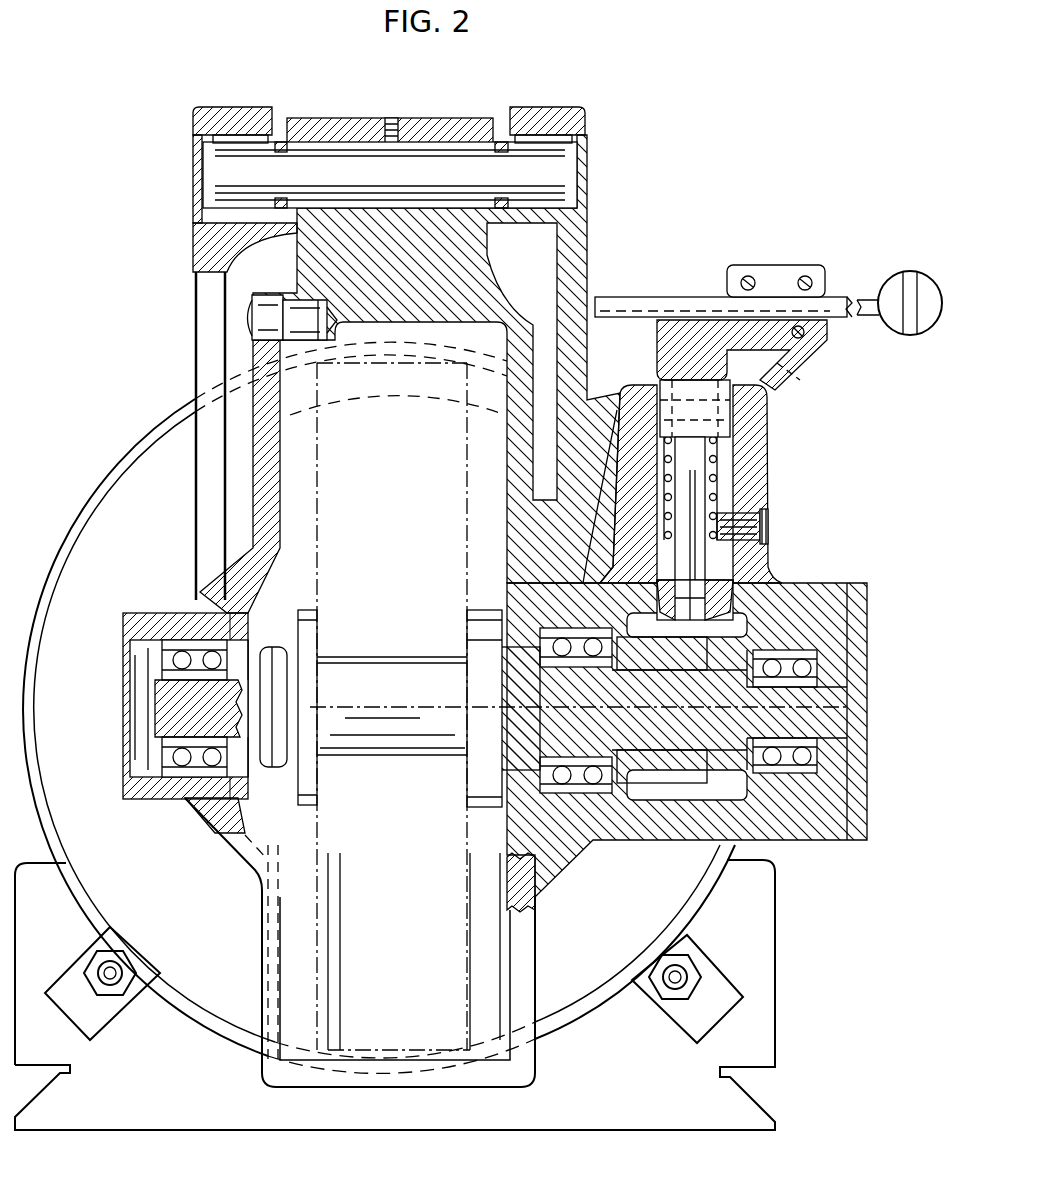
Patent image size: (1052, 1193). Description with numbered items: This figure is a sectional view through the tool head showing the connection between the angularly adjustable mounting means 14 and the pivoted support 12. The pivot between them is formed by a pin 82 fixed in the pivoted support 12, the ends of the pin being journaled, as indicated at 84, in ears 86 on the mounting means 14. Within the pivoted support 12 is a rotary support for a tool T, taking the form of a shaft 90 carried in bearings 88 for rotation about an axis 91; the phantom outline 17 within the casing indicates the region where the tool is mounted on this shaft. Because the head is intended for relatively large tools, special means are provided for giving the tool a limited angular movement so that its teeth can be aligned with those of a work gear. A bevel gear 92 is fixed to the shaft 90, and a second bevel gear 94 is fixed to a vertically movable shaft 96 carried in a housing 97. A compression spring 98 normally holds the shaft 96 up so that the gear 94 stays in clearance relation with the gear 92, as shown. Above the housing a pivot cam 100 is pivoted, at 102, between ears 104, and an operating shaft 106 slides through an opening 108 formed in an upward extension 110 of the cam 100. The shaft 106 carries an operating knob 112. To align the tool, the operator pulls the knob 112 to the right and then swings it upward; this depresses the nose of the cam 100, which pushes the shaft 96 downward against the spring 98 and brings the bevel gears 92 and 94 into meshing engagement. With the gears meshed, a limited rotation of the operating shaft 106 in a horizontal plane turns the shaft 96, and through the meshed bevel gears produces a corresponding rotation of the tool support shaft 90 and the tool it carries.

The pivoted support 12 is at (450, 118).
The angularly adjustable mounting means 14 is at (577, 262).
The impeller 17 is at (318, 978).
The pin 82 is at (210, 195).
The journal 84 is at (550, 118).
The ears 86 is at (235, 107).
The bearings 88 is at (175, 640).
The shaft 90 is at (398, 757).
The axis 91 is at (398, 705).
The bevel gear 92 is at (665, 768).
The bevel gear 94 is at (732, 600).
The vertically movable shaft 96 is at (705, 470).
The housing 97 is at (760, 444).
The compression spring 98 is at (722, 520).
The pivot cam 100 is at (660, 340).
The pivot 102 is at (828, 340).
The ears 104 is at (806, 376).
The operating shaft 106 is at (640, 297).
The opening 108 is at (768, 300).
The upward extension 110 is at (750, 265).
The operating knob 112 is at (932, 275).